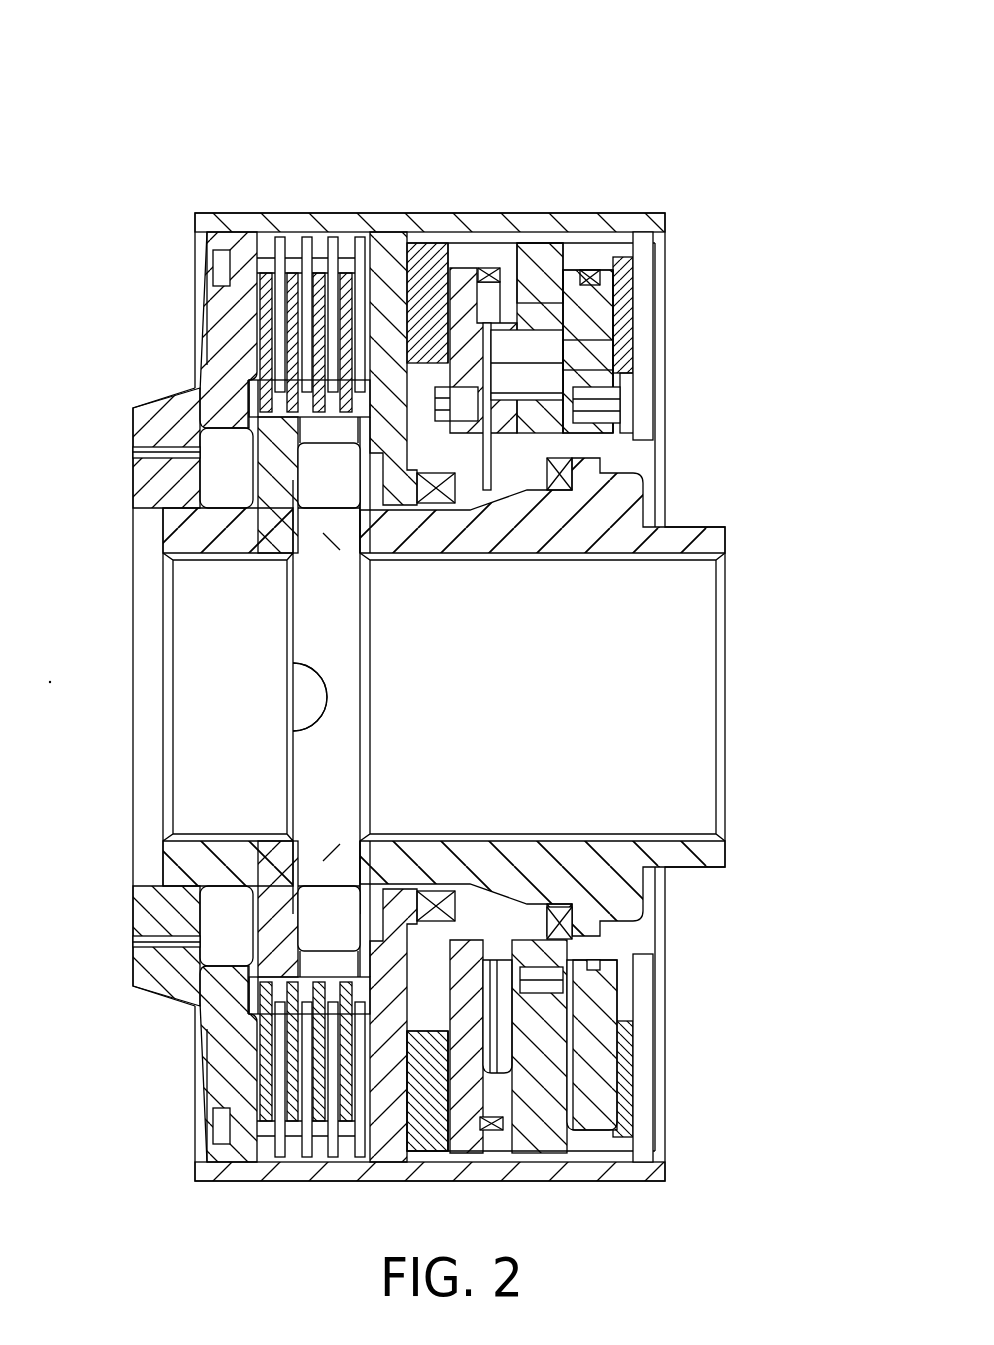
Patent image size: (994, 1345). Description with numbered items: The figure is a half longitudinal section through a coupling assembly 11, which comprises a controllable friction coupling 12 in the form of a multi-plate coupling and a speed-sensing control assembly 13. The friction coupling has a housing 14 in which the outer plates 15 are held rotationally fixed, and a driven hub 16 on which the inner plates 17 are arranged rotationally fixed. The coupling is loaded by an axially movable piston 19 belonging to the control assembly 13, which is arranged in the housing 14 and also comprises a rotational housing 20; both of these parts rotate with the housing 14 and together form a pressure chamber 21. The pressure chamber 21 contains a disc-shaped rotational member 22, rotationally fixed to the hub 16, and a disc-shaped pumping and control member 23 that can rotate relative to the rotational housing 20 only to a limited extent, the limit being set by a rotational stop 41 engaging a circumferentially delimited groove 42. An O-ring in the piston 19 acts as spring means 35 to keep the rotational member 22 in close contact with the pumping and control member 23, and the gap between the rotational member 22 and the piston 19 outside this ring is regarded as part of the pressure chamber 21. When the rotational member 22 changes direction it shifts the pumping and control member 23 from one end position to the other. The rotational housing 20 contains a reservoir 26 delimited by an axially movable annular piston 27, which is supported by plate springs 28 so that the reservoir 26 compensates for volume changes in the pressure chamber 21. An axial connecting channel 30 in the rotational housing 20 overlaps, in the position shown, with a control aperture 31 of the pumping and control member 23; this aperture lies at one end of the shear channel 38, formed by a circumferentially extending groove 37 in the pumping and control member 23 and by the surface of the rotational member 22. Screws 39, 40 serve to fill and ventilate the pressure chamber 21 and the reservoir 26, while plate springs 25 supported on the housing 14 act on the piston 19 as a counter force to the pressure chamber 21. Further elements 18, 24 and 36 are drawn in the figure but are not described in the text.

The coupling assembly 11 is at (103, 128).
The controllable friction coupling 12 is at (300, 140).
The speed-sensing control assembly 13 is at (475, 115).
The housing 14 is at (225, 225).
The outer plates 15 is at (277, 243).
The hub 16 is at (172, 520).
The inner plates 17 is at (253, 390).
The housing wall 18 is at (378, 303).
The piston 19 is at (485, 320).
The rotational housing 20 is at (600, 300).
The pressure chamber 21 is at (540, 385).
The rotational member 22 is at (505, 330).
The pumping and control member 23 is at (520, 340).
The output hub 24 is at (625, 510).
The plate springs 25 is at (410, 290).
The reservoir 26 is at (620, 290).
The annular piston 27 is at (597, 300).
The plate springs 28 is at (648, 300).
The axial connecting channel 30 is at (540, 383).
The control aperture 31 is at (540, 357).
The spring means 35 is at (425, 1035).
The piston member 36 is at (470, 1010).
The circumferentially extending groove 37 is at (530, 1010).
The shear channel 38 is at (490, 985).
The screw 39 is at (465, 297).
The screw 40 is at (630, 393).
The rotational stop 41 is at (533, 917).
The circumferentially delimited groove 42 is at (567, 960).